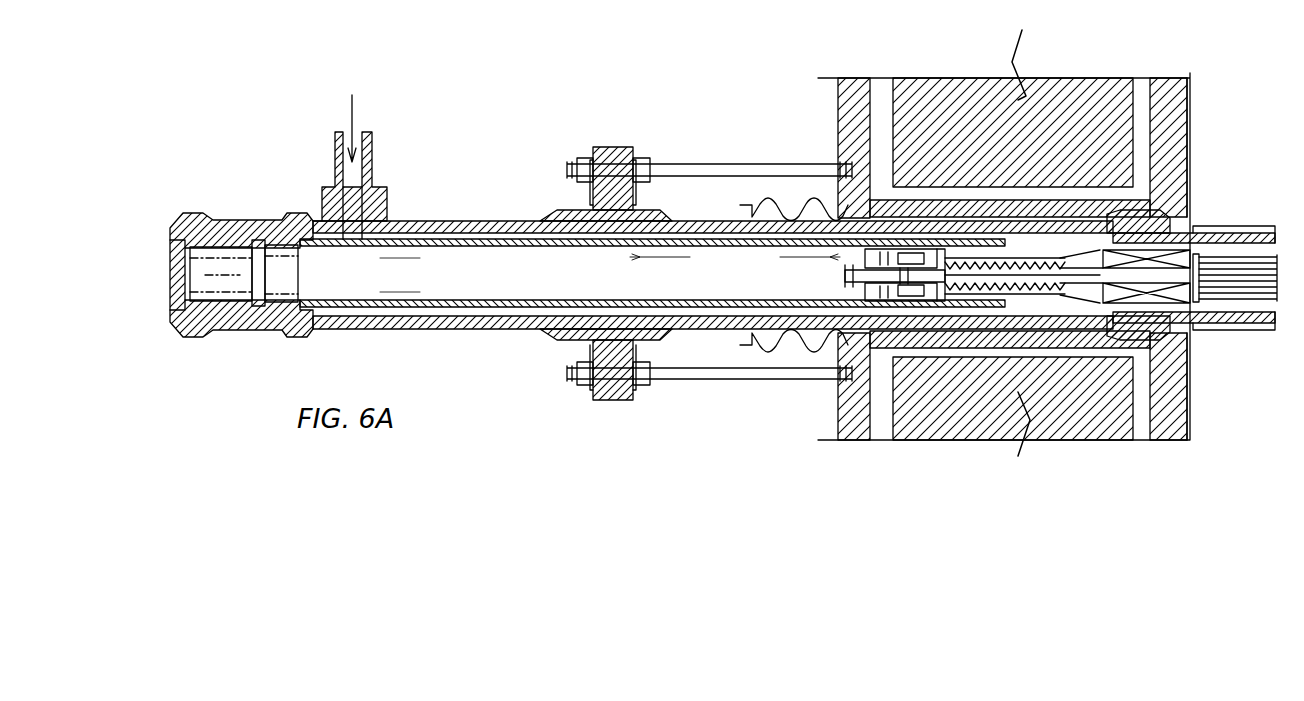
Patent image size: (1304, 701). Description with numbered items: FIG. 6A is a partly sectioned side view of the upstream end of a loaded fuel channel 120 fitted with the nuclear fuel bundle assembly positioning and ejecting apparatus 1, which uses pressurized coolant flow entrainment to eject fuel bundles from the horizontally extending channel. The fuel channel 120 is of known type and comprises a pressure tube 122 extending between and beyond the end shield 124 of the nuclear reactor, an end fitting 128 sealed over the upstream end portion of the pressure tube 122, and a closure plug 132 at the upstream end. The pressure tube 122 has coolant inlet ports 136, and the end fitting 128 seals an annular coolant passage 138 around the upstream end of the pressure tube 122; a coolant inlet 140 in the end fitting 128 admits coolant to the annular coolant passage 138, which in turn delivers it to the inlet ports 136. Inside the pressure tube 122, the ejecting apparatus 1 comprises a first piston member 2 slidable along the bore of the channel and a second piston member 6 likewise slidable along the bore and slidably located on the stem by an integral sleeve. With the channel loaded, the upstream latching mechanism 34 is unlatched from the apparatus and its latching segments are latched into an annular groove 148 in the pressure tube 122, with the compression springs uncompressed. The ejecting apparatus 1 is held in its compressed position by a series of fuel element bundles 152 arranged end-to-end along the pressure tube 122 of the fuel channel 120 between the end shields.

The nuclear fuel bundle assembly positioning and ejecting apparatus 1 is at (1004, 243).
The first piston member 2 is at (960, 270).
The second piston member 6 is at (945, 258).
The upstream latching mechanism 34 is at (853, 244).
The fuel channel 120 is at (1224, 205).
The pressure tube 122 is at (1243, 243).
The end shield 124 is at (1177, 130).
The end fitting 128 is at (571, 210).
The closure plug 132 is at (222, 262).
The coolant inlet ports 136 is at (987, 270).
The annular coolant passage 138 is at (451, 240).
The coolant inlet 140 is at (352, 175).
The annular groove 148 is at (906, 232).
The fuel element bundles 152 is at (1257, 277).